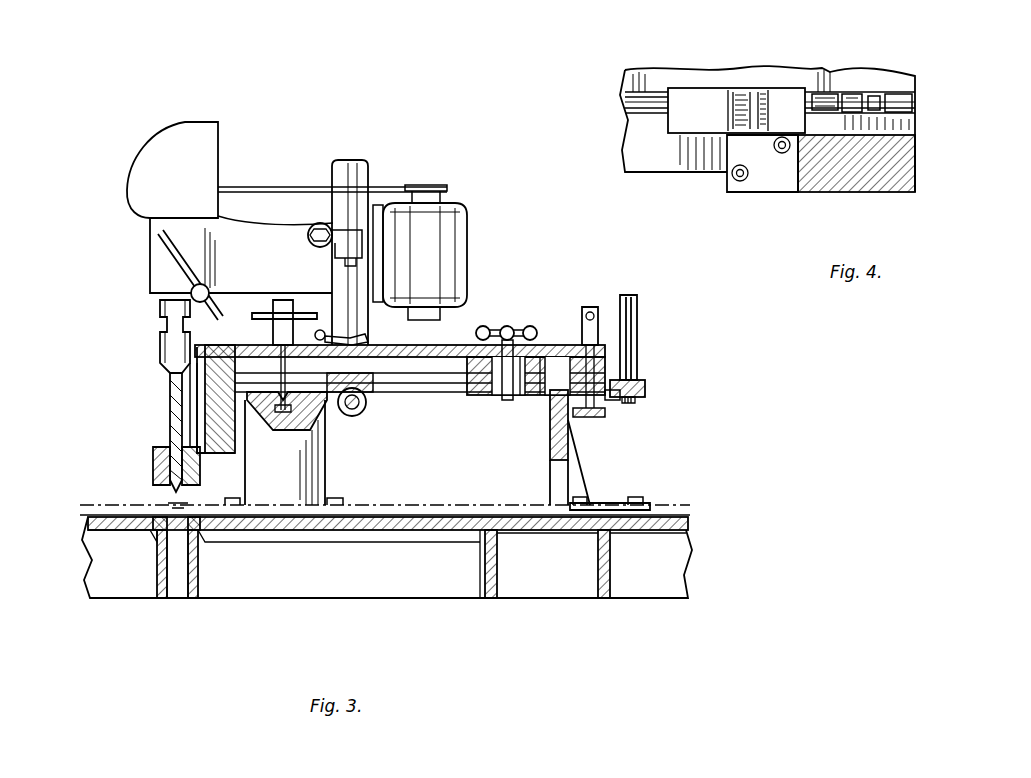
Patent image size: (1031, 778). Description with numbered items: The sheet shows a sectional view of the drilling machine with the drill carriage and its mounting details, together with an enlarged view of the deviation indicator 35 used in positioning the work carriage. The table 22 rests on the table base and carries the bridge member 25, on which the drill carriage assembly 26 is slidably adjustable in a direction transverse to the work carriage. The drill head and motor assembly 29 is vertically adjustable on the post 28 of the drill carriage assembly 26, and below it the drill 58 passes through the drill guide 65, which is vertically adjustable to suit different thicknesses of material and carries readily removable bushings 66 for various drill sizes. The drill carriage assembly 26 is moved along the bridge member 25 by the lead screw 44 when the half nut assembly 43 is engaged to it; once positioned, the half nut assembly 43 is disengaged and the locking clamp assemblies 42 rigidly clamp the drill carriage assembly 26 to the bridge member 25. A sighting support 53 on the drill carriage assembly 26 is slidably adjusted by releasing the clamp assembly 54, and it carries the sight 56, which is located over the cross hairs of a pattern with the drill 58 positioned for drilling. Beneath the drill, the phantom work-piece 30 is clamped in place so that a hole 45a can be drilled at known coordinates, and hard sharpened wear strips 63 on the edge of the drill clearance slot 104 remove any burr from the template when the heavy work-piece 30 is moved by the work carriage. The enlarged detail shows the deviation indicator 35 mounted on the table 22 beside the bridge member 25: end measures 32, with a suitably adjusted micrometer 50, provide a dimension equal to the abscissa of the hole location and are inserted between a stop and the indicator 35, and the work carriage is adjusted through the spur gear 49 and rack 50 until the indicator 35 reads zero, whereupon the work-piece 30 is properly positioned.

In FIG. 3, the table 22 is at (392, 597).
In FIG. 4, the table 22 is at (645, 150).
In FIG. 3, the bridge member 25 is at (330, 470).
In FIG. 4, the bridge member 25 is at (856, 188).
In FIG. 3, the drill carriage assembly 26 is at (545, 345).
In FIG. 3, the post 28 is at (335, 165).
In FIG. 3, the drill head and motor assembly 29 is at (181, 125).
In FIG. 3, the work-piece 30 is at (464, 490).
In FIG. 4, the end measures 32 is at (920, 112).
In FIG. 4, the deviation indicator 35 is at (712, 95).
In FIG. 3, the locking clamp assemblies 42 is at (282, 307).
In FIG. 3, the half nut assembly 43 is at (360, 340).
In FIG. 3, the lead screw 44 is at (350, 412).
In FIG. 3, the hole 45a is at (176, 504).
In FIG. 4, the spur gear 49 is at (627, 105).
In FIG. 4, the rack 50 is at (845, 112).
In FIG. 3, the sighting support 53 is at (612, 400).
In FIG. 3, the clamp assembly 54 is at (522, 333).
In FIG. 3, the sight 56 is at (640, 330).
In FIG. 3, the drill 58 is at (170, 380).
In FIG. 3, the wear strips 63 is at (152, 517).
In FIG. 3, the drill guide 65 is at (156, 462).
In FIG. 3, the bushings 66 is at (163, 447).
In FIG. 3, the drill clearance slot 104 is at (178, 560).